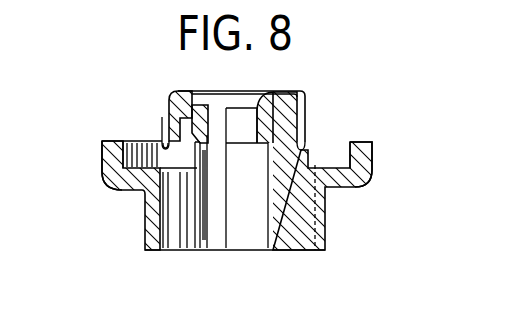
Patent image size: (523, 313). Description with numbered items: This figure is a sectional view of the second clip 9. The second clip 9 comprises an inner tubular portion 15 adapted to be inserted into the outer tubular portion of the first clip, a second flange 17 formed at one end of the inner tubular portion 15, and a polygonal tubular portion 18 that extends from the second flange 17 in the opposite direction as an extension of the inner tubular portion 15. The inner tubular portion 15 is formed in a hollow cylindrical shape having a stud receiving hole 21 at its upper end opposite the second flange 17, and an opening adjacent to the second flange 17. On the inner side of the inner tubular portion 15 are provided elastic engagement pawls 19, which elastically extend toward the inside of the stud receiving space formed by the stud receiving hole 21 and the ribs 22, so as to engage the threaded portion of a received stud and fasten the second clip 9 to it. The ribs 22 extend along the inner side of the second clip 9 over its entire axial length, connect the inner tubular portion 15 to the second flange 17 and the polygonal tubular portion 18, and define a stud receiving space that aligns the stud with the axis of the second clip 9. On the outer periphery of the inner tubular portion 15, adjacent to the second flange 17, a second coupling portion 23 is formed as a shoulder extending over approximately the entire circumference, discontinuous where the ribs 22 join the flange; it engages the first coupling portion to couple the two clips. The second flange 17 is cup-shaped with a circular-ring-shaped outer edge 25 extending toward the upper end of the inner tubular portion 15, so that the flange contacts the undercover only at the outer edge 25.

The second clip 9 is at (400, 153).
The inner tubular portion 15 is at (162, 117).
The second flange 17 is at (347, 193).
The polygonal tubular portion 18 is at (148, 230).
The elastic engagement pawls 19 is at (250, 133).
The stud receiving hole 21 is at (265, 110).
The ribs 22 is at (287, 237).
The second coupling portion 23 is at (166, 146).
The circular-ring-shaped outer edge 25 is at (115, 140).